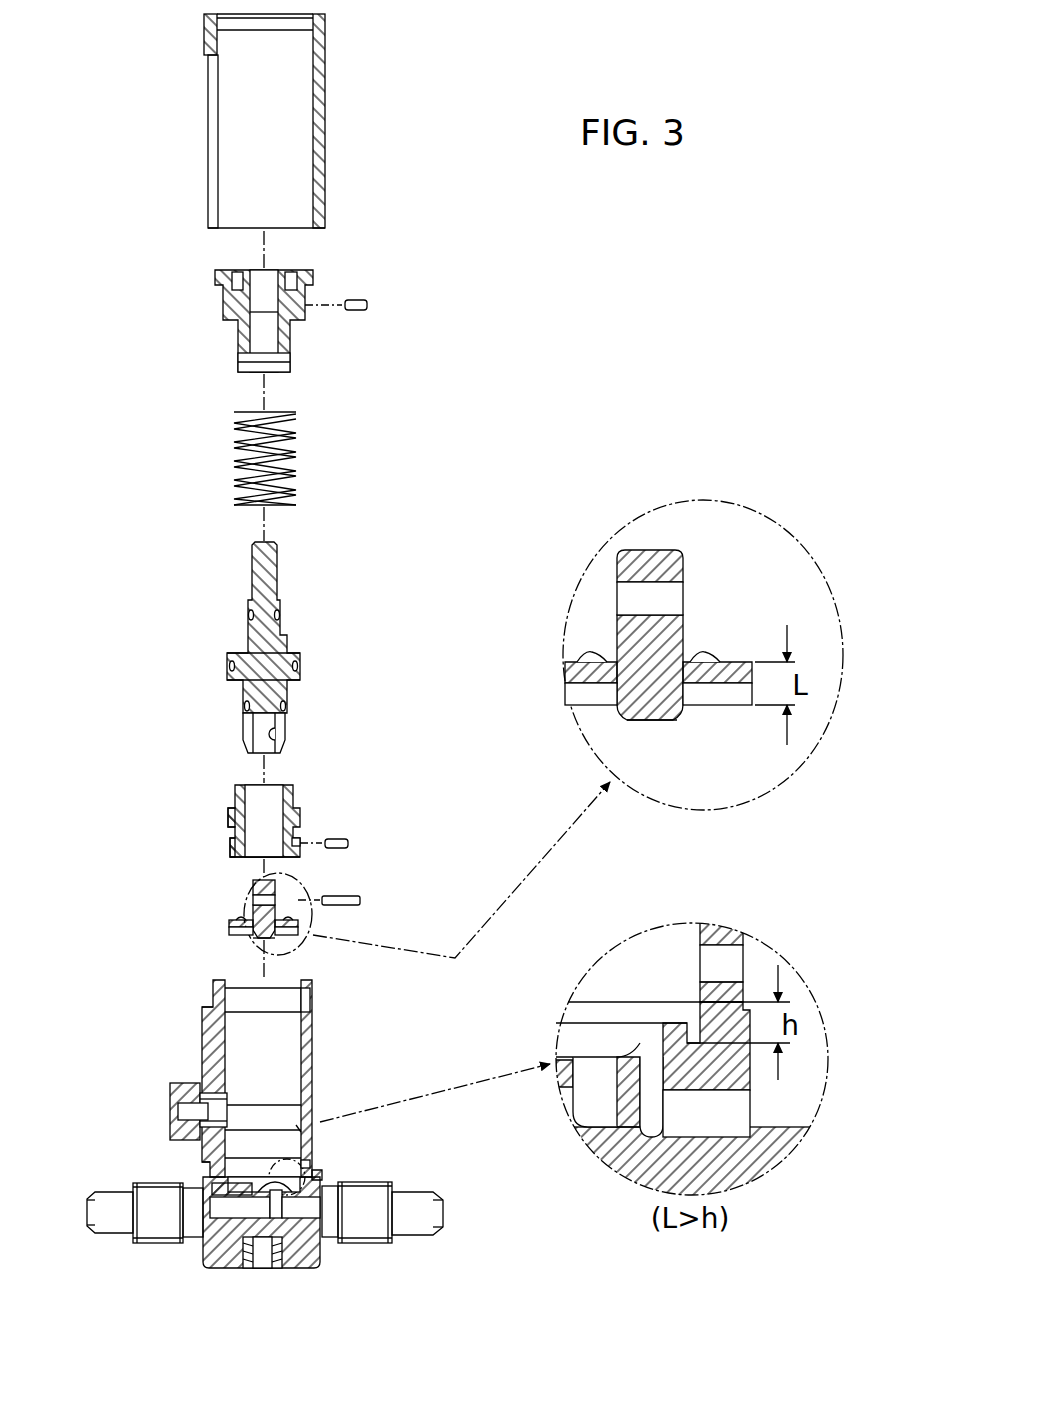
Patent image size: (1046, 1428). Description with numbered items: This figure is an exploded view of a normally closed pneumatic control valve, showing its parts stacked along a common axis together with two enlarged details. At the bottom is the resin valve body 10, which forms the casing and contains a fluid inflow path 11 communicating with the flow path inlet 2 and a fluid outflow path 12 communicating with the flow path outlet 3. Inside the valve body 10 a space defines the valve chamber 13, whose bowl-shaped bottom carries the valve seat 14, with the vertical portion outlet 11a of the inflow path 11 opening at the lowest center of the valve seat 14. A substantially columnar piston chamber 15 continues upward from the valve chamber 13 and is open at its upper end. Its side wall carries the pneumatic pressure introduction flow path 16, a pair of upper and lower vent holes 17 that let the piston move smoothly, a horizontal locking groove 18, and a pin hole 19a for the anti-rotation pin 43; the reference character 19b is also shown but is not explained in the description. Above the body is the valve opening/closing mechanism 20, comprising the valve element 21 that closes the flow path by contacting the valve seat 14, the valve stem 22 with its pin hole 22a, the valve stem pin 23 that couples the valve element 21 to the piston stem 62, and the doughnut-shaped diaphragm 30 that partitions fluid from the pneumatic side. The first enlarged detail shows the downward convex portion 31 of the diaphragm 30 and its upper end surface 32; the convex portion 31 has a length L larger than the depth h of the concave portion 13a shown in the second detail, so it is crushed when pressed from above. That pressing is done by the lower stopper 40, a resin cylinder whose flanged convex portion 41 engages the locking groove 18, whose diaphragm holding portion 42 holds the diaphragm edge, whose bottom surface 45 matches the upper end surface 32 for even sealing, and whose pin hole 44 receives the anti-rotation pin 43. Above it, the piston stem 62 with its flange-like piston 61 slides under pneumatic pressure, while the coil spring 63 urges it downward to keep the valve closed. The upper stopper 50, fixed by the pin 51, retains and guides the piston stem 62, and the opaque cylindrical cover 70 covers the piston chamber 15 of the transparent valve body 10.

The flow path inlet 2 is at (87, 1212).
The flow path outlet 3 is at (443, 1213).
The valve body 10 is at (203, 1262).
The fluid inflow path 11 is at (228, 1218).
The vertical portion outlet 11a is at (262, 1195).
The fluid outflow path 12 is at (305, 1215).
The valve chamber 13 is at (293, 1185).
The concave portion 13a is at (288, 1182).
The valve seat 14 is at (250, 1192).
The piston chamber 15 is at (280, 1047).
The pneumatic pressure introduction flow path 16 is at (220, 1110).
The vent holes 17 is at (203, 1038).
The locking groove 18 is at (285, 1130).
The pin hole 19a is at (310, 1175).
The upper groove 19b is at (305, 1000).
The valve opening/closing mechanism 20 is at (228, 928).
The valve element 21 is at (262, 940).
The valve stem 22 is at (254, 880).
The pin hole 22a is at (254, 897).
The valve stem pin 23 is at (361, 900).
The diaphragm 30 is at (250, 917).
The convex portion 31 is at (297, 937).
The upper end surface 32 is at (295, 920).
The lower stopper 40 is at (300, 797).
The flanged convex portion 41 is at (228, 816).
The diaphragm holding portion 42 is at (300, 853).
The anti-rotation pin 43 is at (349, 843).
The pin hole 44 is at (300, 840).
The bottom surface 45 is at (232, 860).
The upper stopper 50 is at (318, 272).
The pin 51 is at (368, 305).
The piston 61 is at (300, 656).
The piston stem 62 is at (266, 582).
The coil spring 63 is at (296, 436).
The cylindrical cover 70 is at (320, 14).